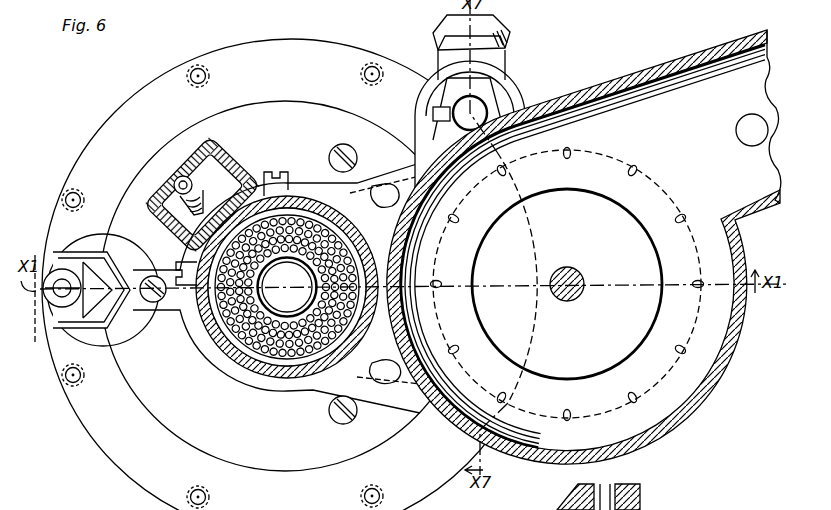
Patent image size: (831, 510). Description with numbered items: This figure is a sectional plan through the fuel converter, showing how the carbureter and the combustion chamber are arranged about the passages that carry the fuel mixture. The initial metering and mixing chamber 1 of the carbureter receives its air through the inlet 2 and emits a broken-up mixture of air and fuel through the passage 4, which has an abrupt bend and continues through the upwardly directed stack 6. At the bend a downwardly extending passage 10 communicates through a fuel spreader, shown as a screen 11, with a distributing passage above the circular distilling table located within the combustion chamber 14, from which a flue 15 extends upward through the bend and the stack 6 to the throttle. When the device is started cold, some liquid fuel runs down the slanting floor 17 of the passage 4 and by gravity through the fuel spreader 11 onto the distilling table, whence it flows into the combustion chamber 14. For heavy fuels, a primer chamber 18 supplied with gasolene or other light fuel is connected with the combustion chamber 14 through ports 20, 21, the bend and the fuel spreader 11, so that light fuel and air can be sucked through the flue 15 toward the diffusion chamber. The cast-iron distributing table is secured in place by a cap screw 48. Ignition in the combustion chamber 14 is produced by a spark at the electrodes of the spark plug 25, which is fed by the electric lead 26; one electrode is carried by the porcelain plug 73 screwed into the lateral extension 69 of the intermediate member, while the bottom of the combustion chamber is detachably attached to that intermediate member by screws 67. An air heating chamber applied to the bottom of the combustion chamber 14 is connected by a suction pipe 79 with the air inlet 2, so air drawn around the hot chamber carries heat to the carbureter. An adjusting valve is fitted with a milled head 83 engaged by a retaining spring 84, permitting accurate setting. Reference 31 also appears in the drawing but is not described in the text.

The initial metering and mixing chamber 1 is at (738, 377).
The air inlet 2 is at (584, 247).
The passage 4 is at (515, 284).
The stack 6 is at (220, 346).
The downwardly extending passage 10 is at (278, 356).
The fuel spreader 11 is at (250, 368).
The combustion chamber 14 is at (126, 460).
The flue 15 is at (300, 268).
The slanting floor 17 is at (392, 183).
The primer chamber 18 is at (213, 158).
The port 20 is at (196, 182).
The port 21 is at (196, 212).
The spark plug 25 is at (122, 336).
The lead 26 is at (36, 300).
The bearing fragment 31 is at (560, 500).
The cap screw 48 is at (338, 150).
The screws 67 is at (218, 500).
The lateral extension 69 is at (103, 346).
The porcelain plug 73 is at (120, 254).
The suction pipe 79 is at (748, 140).
The milled head 83 is at (492, 95).
The retaining spring 84 is at (432, 114).